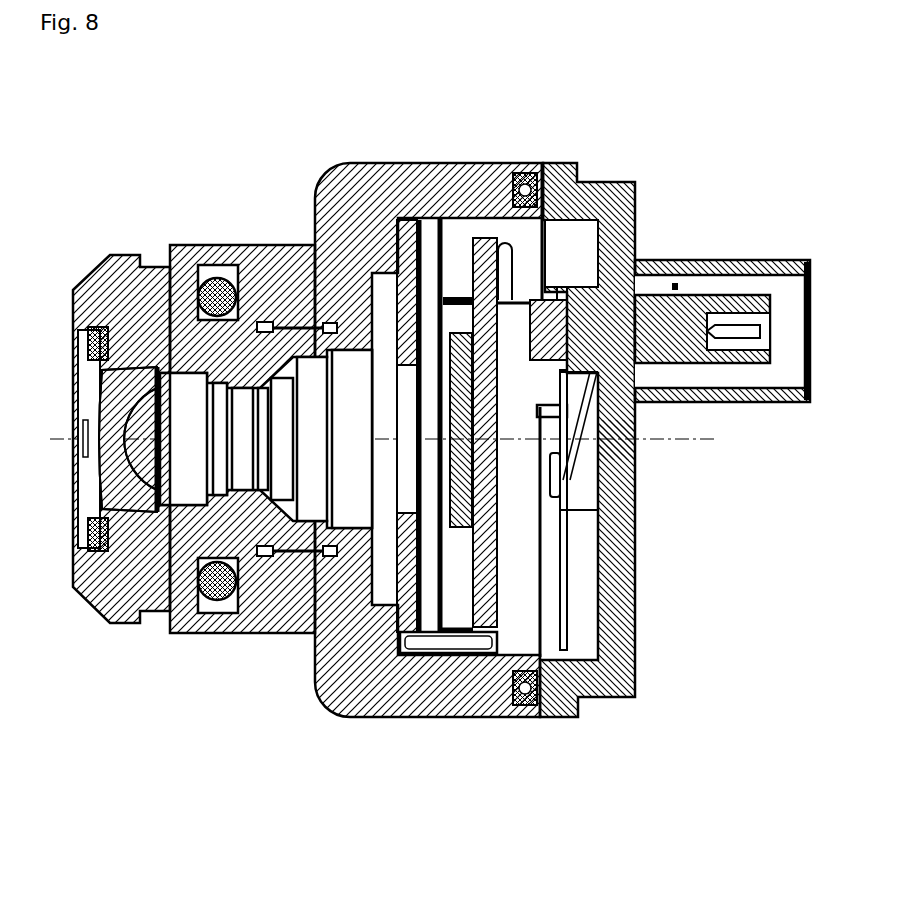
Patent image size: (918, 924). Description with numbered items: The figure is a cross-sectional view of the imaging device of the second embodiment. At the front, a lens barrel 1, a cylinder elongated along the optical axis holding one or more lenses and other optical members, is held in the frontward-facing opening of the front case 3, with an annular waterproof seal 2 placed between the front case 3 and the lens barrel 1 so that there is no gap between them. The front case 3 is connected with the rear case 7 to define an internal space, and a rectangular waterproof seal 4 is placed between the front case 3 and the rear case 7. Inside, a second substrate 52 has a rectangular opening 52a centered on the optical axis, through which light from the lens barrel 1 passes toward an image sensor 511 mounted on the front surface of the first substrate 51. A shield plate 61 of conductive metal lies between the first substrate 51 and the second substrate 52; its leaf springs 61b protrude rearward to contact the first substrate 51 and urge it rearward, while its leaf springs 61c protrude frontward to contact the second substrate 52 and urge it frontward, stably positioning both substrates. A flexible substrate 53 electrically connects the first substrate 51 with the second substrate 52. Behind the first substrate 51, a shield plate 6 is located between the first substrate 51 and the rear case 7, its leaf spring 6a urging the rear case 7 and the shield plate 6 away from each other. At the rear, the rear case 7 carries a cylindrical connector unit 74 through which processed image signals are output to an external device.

The lens barrel 1 is at (145, 247).
The waterproof seal 2 is at (207, 246).
The front case 3 is at (282, 246).
The waterproof seal 4 is at (520, 162).
The shield plate 6 is at (635, 645).
The leaf spring 6a is at (637, 438).
The rear case 7 is at (592, 193).
The first substrate 51 is at (497, 550).
The second substrate 52 is at (385, 162).
The opening 52a is at (407, 503).
The flexible substrate 53 is at (447, 645).
The shield plate 61 is at (450, 162).
The leaf spring 61b is at (500, 645).
The leaf spring 61c is at (428, 162).
The connector unit 74 is at (717, 258).
The image sensor 511 is at (460, 500).